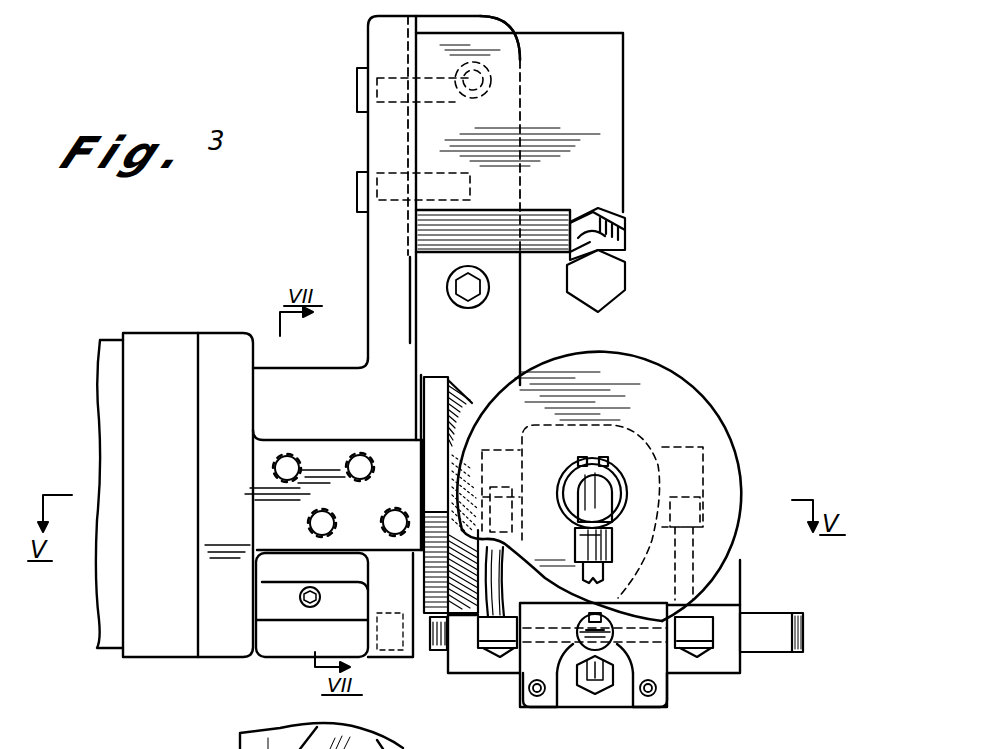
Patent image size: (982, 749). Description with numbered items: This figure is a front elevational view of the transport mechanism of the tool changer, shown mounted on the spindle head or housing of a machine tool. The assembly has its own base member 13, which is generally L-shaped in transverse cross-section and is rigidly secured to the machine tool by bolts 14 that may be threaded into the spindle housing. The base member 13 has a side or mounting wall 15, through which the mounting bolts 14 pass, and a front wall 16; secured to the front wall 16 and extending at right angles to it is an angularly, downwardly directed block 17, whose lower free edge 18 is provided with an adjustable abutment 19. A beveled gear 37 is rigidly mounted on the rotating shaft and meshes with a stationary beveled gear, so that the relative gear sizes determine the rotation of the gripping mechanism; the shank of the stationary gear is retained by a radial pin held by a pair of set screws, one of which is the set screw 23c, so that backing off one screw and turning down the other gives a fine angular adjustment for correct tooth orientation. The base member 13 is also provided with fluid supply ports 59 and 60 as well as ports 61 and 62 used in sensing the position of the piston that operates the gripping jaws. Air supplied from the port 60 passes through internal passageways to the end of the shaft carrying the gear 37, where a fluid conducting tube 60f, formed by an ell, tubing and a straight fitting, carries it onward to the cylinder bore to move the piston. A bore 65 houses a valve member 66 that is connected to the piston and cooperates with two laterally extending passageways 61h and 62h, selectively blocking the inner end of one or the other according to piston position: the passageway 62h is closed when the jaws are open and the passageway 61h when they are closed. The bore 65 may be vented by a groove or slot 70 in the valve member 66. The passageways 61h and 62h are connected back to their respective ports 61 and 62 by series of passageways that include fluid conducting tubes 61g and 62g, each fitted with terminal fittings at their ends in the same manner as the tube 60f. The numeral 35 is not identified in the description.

The base member 13 is at (362, 248).
The bolts 14 is at (468, 298).
The side or mounting wall 15 is at (485, 26).
The front wall 16 is at (388, 57).
The block 17 is at (613, 140).
The lower free edge 18 is at (547, 222).
The adjustable abutment 19 is at (610, 281).
The set screw 23c is at (307, 606).
The gear 35 is at (427, 642).
The beveled gear 37 is at (678, 406).
The fluid supply port 59 is at (310, 524).
The fluid supply port 60 is at (392, 510).
The fluid conducting tube 60f is at (583, 547).
The port 61 is at (281, 477).
The fluid conducting tube 61g is at (492, 600).
The laterally extending passageway 61h is at (572, 642).
The port 62 is at (369, 466).
The fluid conducting tube 62g is at (700, 610).
The laterally extending passageway 62h is at (665, 645).
The bore 65 is at (633, 675).
The valve member 66 is at (603, 648).
The groove or slot 70 is at (594, 616).